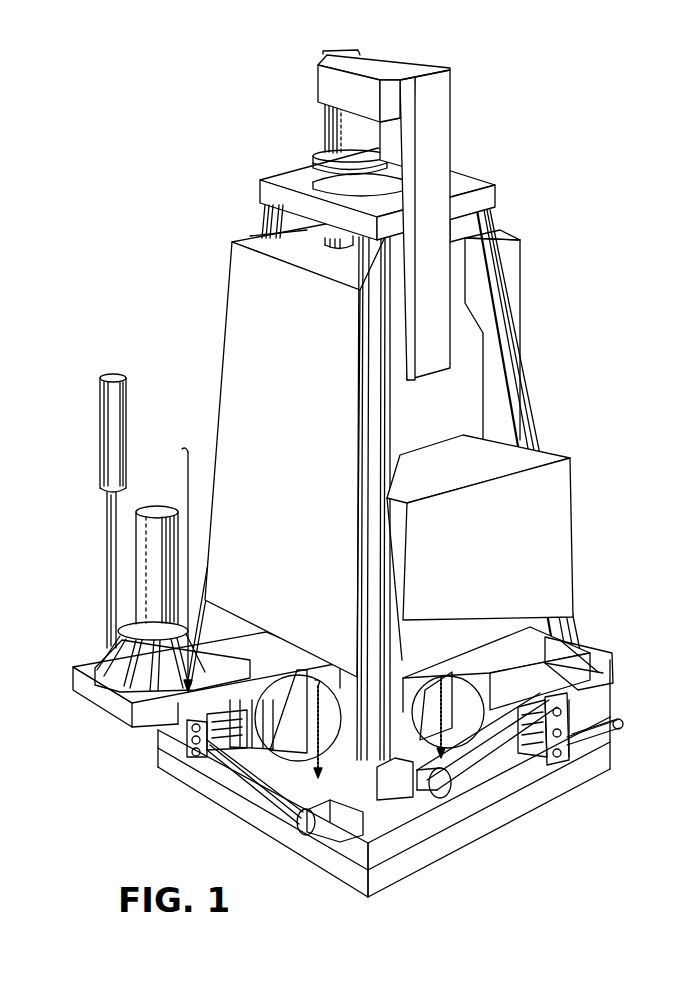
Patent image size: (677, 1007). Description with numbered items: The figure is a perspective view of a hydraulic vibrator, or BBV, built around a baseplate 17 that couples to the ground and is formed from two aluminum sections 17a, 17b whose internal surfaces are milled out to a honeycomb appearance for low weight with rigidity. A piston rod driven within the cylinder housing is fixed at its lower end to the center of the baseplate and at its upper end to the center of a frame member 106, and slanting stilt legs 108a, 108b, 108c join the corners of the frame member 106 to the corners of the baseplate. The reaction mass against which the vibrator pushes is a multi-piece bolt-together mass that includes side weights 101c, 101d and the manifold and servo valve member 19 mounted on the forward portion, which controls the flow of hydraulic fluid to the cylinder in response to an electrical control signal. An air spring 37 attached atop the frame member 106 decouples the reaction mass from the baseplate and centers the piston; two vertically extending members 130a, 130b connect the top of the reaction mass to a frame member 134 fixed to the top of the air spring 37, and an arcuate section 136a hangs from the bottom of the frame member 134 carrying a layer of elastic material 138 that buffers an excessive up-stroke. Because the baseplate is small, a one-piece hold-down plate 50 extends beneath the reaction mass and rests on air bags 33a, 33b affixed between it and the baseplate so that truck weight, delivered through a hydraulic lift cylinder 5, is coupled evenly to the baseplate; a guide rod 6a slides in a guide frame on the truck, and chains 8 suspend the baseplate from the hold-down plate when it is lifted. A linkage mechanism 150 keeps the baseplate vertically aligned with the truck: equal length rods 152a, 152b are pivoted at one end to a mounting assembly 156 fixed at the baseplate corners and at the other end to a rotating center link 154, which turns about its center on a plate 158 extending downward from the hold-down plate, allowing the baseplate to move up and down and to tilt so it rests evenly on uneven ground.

The vertically extending member 130b is at (332, 56).
The frame member 134 is at (405, 66).
The arcuate section 136a is at (322, 118).
The air spring 37 is at (398, 136).
The layer of elastic material 138 is at (318, 158).
The vertically extending member 130a is at (450, 156).
The frame member 106 is at (488, 184).
The stilt leg 108c is at (262, 214).
The side weight 101d is at (520, 250).
The side weight 101c is at (228, 300).
The stilt leg 108b is at (528, 388).
The stilt leg 108a is at (389, 424).
The manifold and servo valve member 19 is at (572, 482).
The hydraulic lift cylinder 5 is at (106, 522).
The guide rod 6a is at (174, 506).
The air bag 33b is at (429, 688).
The plate 158 is at (468, 698).
The air bag 33a is at (294, 692).
The mounting assembly 156 is at (606, 684).
The hold-down plate 50 is at (113, 717).
The chain 8 is at (316, 766).
The baseplate section 17a is at (604, 738).
The equal length rod 152b is at (243, 808).
The baseplate section 17b is at (596, 760).
The rotating center link 154 is at (538, 770).
The linkage mechanism 150 is at (580, 772).
The equal length rod 152a is at (478, 788).
The baseplate 17 is at (490, 845).